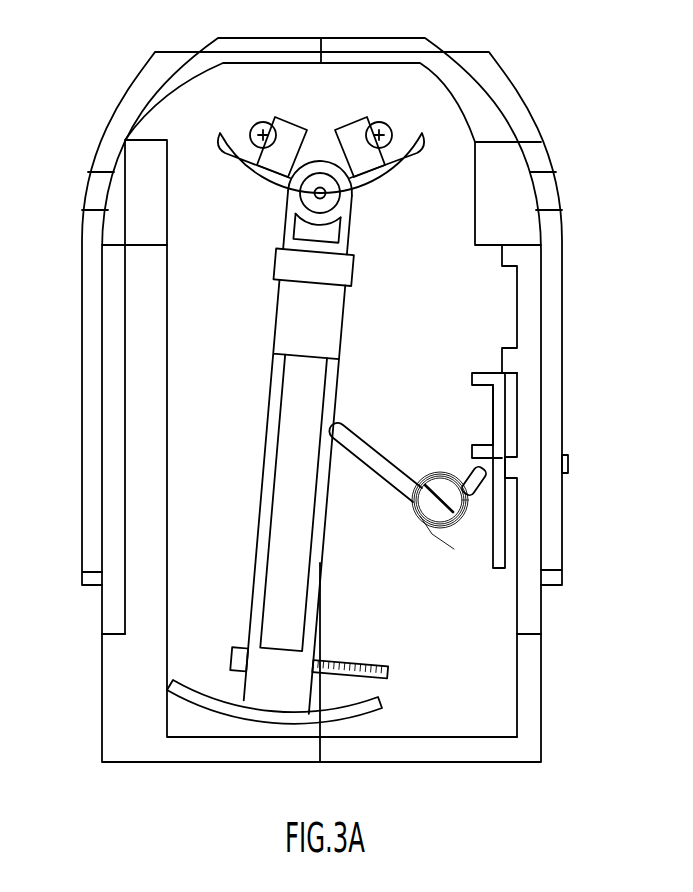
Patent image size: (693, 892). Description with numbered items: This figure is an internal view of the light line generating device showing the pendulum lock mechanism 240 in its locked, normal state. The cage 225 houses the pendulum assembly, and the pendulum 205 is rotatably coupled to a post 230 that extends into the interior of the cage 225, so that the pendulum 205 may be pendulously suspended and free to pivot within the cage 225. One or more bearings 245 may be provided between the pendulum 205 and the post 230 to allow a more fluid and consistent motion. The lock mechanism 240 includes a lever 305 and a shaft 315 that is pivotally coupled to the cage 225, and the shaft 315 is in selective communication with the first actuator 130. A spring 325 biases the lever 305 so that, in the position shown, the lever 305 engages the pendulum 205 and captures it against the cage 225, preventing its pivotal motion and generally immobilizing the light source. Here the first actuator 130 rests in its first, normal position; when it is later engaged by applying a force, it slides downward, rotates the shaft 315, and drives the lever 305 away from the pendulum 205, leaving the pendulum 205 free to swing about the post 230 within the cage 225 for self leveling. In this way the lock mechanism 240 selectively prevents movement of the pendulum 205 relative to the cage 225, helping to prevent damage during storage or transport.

The cage 225 is at (532, 115).
The bearings 245 is at (312, 203).
The post 230 is at (326, 195).
The pendulum 205 is at (293, 567).
The lever 305 is at (363, 450).
The shaft 315 is at (432, 512).
The spring 325 is at (441, 463).
The first actuator 130 is at (502, 535).
The pendulum lock mechanism 240 is at (441, 568).